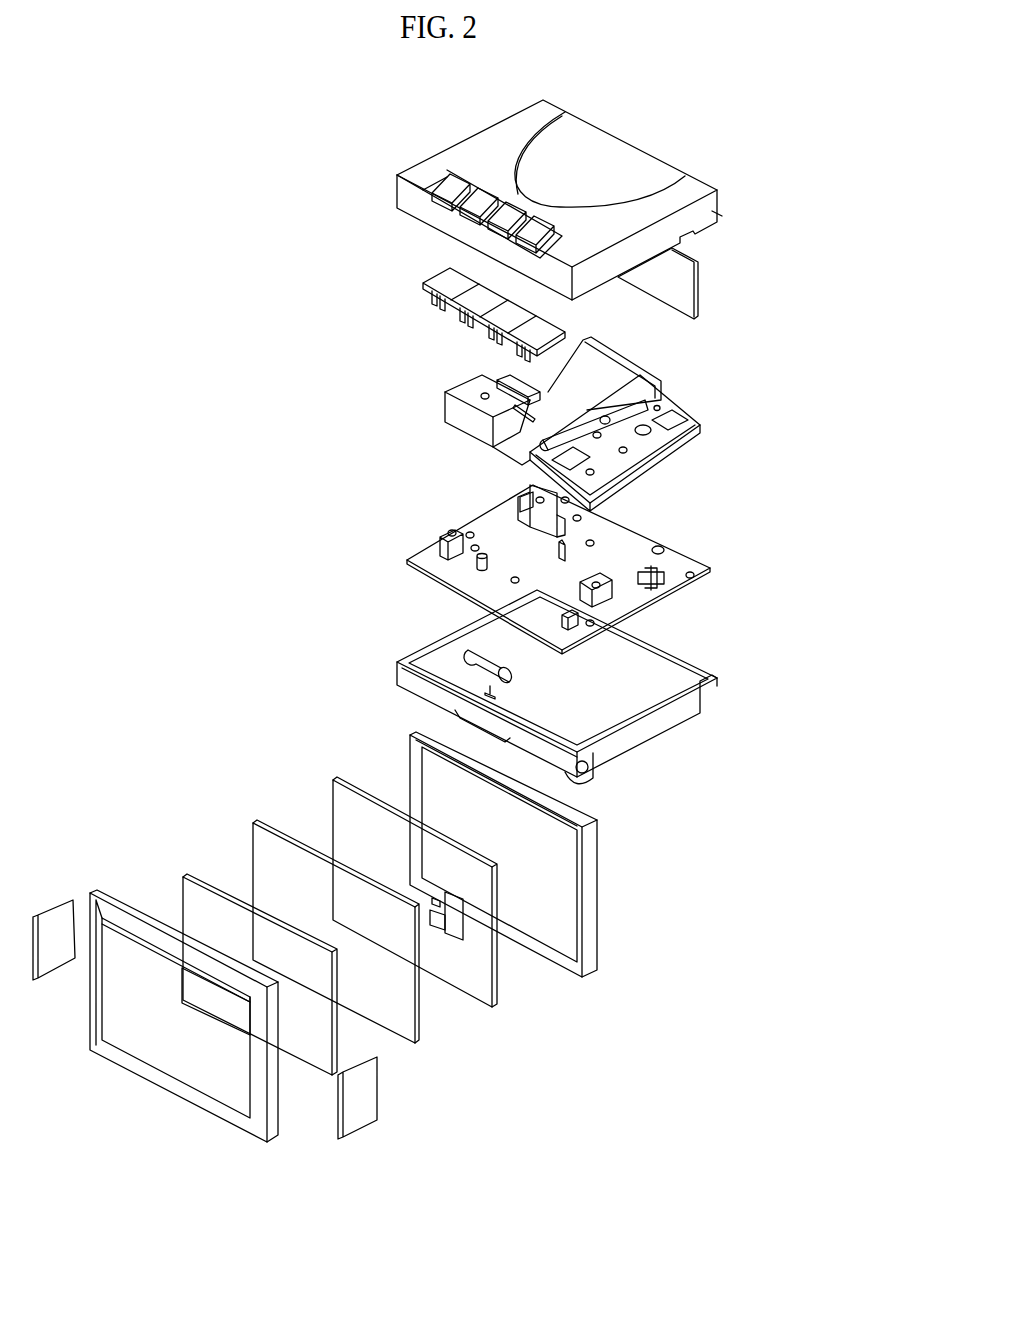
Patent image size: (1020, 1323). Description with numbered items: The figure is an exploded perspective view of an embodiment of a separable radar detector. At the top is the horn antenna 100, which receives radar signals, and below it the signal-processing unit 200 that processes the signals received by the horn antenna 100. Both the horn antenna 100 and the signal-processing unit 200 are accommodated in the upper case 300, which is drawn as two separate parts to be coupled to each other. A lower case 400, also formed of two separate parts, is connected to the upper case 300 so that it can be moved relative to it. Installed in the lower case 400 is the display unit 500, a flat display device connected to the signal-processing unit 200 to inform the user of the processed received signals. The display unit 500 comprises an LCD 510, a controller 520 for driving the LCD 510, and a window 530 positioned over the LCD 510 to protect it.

The horn antenna 100 is at (715, 392).
The signal-processing unit 200 is at (697, 538).
The upper case 300 is at (710, 213).
The lower case 400 is at (590, 888).
The display unit 500 is at (276, 936).
The LCD 510 is at (263, 853).
The controller 520 is at (335, 812).
The window 530 is at (188, 900).